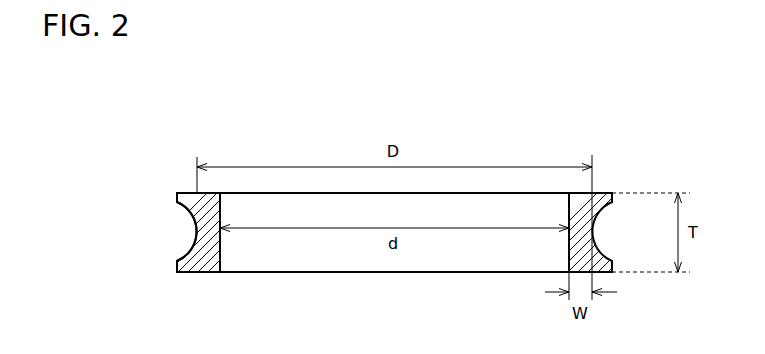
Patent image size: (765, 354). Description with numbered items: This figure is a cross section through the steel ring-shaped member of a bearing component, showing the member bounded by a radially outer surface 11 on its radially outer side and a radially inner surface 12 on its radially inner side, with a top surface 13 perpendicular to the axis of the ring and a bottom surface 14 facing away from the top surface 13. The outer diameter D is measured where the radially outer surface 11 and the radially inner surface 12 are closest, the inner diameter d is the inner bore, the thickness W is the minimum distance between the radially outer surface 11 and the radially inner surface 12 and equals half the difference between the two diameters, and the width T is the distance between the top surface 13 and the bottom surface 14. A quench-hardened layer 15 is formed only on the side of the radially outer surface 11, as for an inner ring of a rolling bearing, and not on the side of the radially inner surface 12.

The radially outer surface 11 is at (197, 219).
The radially inner surface 12 is at (222, 255).
The top surface 13 is at (197, 192).
The bottom surface 14 is at (197, 272).
The quench-hardened layer 15 is at (201, 239).